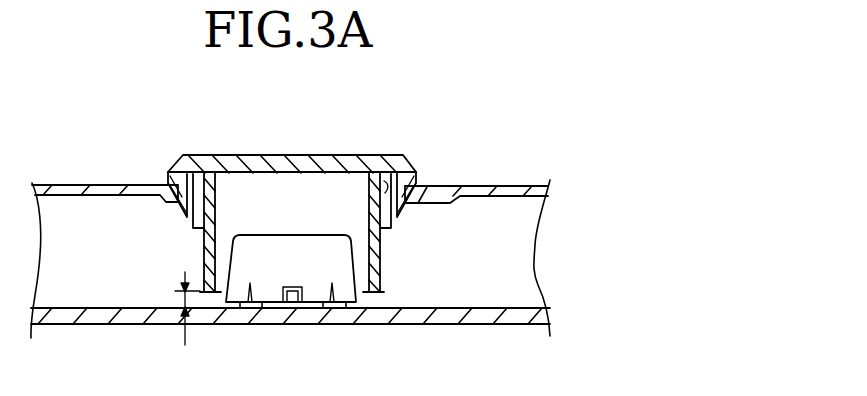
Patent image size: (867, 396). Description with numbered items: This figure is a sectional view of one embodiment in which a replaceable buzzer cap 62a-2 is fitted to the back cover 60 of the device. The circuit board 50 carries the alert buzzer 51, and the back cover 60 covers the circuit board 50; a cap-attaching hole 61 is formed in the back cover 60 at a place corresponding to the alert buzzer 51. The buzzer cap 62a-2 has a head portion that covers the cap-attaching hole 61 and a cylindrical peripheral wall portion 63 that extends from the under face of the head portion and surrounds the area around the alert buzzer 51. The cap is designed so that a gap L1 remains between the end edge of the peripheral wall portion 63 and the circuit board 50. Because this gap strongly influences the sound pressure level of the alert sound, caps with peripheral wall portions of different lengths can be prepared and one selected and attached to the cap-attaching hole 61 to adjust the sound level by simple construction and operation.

The circuit board 50 is at (115, 324).
The alert buzzer 51 is at (338, 262).
The back cover 60 is at (517, 186).
The cap-attaching hole 61 is at (407, 179).
The buzzer cap 62a-2 is at (270, 156).
The peripheral wall portion 63 is at (200, 247).
The gap L1 is at (183, 298).